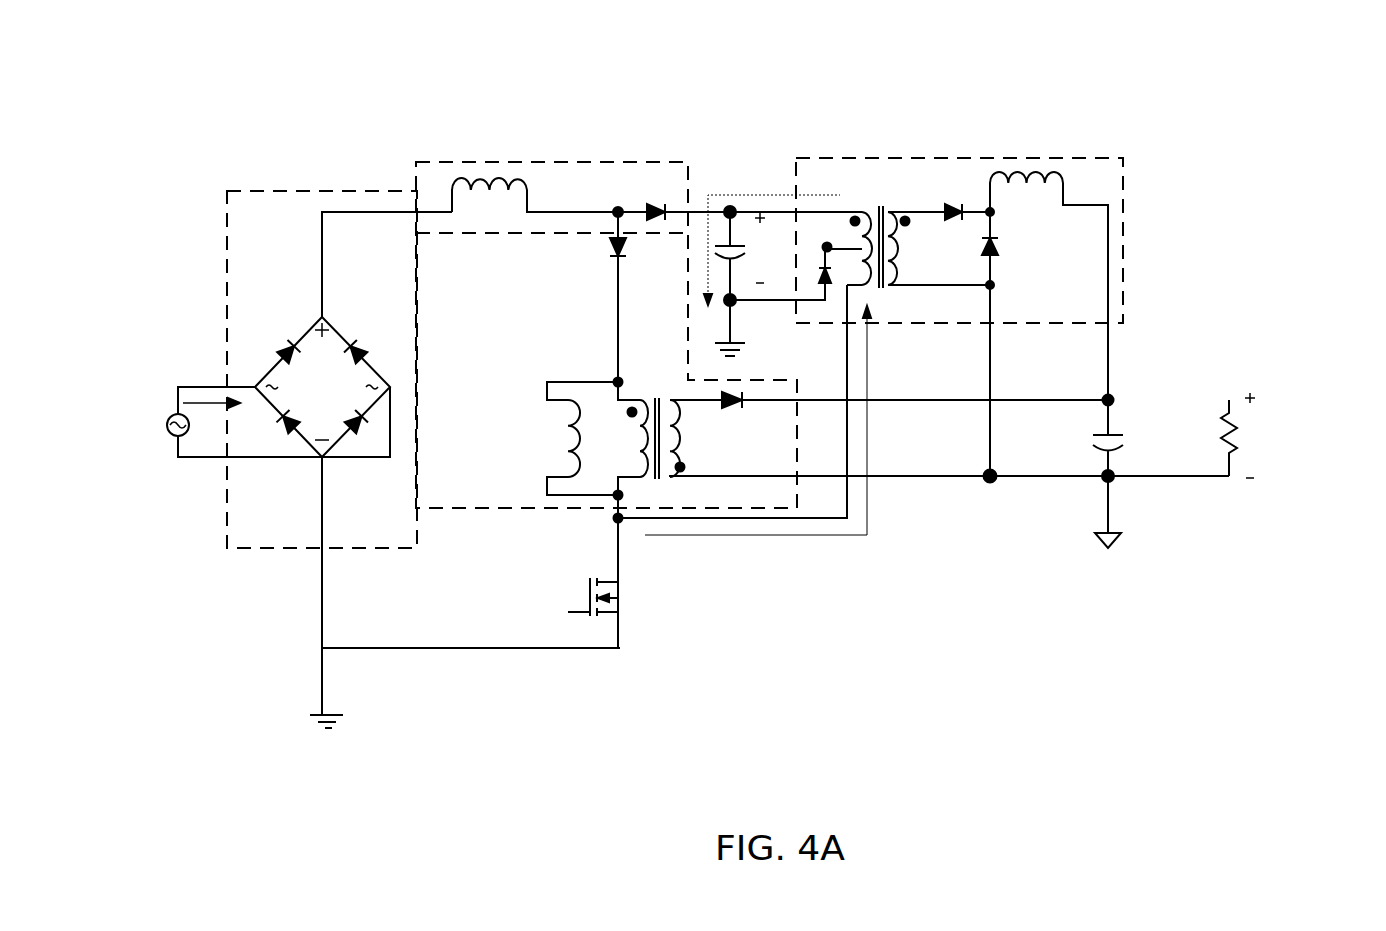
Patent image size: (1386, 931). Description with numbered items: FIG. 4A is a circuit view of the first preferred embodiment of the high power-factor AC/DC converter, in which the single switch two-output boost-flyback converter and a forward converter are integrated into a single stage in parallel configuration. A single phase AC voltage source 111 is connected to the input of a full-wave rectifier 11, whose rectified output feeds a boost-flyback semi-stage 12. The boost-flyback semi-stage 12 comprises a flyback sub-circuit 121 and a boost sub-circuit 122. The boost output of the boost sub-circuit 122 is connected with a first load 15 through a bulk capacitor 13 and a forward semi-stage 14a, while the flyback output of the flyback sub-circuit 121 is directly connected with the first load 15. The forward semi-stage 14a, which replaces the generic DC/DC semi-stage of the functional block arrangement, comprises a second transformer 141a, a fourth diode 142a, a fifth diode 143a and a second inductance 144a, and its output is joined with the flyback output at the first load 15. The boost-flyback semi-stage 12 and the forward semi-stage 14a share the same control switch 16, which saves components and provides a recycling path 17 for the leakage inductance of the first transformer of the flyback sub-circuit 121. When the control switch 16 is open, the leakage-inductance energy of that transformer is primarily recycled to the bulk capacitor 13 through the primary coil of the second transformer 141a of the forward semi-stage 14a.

The full-wave rectifier 11 is at (227, 276).
The single phase AC voltage source 111 is at (167, 424).
The boost-flyback semi-stage 12 is at (623, 130).
The flyback sub-circuit 121 is at (737, 492).
The boost sub-circuit 122 is at (430, 167).
The bulk capacitor 13 is at (740, 245).
The forward semi-stage 14a is at (1123, 212).
The second transformer 141a is at (879, 204).
The fourth diode 142a is at (945, 204).
The fifth diode 143a is at (1000, 250).
The second inductance 144a is at (1045, 172).
The first load 15 is at (1235, 430).
The control switch 16 is at (582, 603).
The recycling path 17 is at (758, 439).